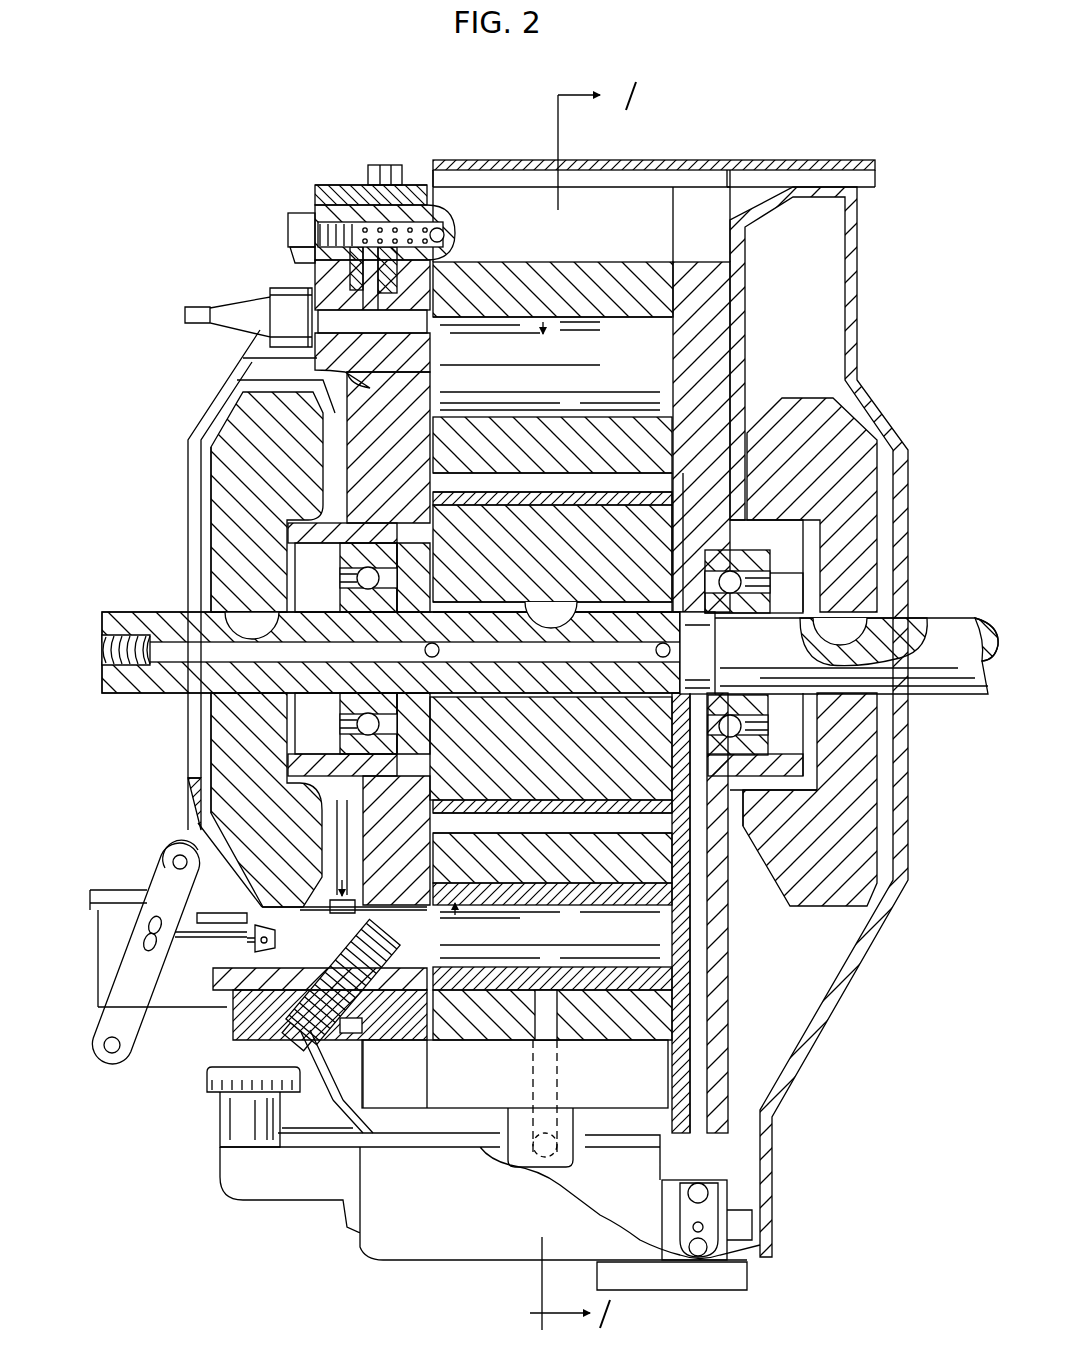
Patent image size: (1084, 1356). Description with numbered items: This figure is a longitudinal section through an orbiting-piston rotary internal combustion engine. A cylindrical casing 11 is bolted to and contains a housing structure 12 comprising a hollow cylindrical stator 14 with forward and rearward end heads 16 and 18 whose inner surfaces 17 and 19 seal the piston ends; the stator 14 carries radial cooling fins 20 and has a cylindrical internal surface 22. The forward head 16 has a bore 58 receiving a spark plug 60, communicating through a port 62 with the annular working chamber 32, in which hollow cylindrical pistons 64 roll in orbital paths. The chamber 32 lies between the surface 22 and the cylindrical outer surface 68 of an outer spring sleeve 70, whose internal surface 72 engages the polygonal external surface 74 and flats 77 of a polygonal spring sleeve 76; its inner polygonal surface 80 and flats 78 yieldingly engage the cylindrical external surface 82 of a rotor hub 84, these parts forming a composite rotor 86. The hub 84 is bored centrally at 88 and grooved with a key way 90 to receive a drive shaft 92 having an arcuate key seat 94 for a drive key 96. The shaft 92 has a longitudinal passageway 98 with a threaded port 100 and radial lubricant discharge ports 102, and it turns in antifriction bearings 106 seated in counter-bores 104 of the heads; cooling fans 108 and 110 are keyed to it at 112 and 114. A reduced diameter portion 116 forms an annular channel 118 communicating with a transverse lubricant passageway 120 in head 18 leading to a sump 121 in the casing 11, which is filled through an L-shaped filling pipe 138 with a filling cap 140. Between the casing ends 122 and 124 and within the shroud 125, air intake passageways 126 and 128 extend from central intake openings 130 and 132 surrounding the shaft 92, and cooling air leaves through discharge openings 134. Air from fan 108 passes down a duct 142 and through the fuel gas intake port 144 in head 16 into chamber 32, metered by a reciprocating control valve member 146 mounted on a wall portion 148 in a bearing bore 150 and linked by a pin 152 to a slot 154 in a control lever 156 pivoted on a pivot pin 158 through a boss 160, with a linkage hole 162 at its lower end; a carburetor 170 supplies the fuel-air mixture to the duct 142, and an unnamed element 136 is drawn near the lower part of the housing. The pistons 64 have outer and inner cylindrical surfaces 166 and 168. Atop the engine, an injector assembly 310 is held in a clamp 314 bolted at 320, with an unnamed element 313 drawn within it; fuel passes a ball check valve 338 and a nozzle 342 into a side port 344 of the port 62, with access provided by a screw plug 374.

The cylindrical casing 11 is at (290, 268).
The housing structure 12 is at (312, 262).
The hollow cylindrical stator 14 is at (580, 270).
The forward end head 16 is at (428, 372).
The inner surface of forward end head 17 is at (428, 1015).
The rearward end head 18 is at (680, 364).
The inner surface of rearward end head 19 is at (652, 1040).
The radial cooling fins 20 is at (583, 200).
The cylindrical internal surface of stator 22 is at (596, 312).
The annular working chamber 32 is at (662, 320).
The bore 58 is at (350, 347).
The spark plug 60 is at (233, 292).
The port 62 is at (432, 322).
The hollow cylindrical pistons 64 is at (543, 322).
The cylindrical outer surface of outer spring sleeve 68 is at (668, 415).
The hollow cylindrical outer spring sleeve 70 is at (578, 415).
The internal cylindrical surface of outer spring sleeve 72 is at (605, 474).
The polygonal external surface 74 is at (518, 490).
The polygonal spring sleeve 76 is at (610, 508).
The flats 77 is at (570, 495).
The flats 78 is at (470, 500).
The inner polygonal surface 80 is at (480, 505).
The cylindrical external surface of rotor hub 82 is at (645, 800).
The cylindrical rotor hub 84 is at (650, 530).
The composite engine rotor 86 is at (483, 415).
The central bore 88 is at (600, 690).
The key way 90 is at (640, 605).
The drive shaft 92 is at (165, 695).
The arcuate key seat 94 is at (540, 618).
The drive key 96 is at (570, 622).
The longitudinal passageway 98 is at (363, 655).
The threaded port 100 is at (140, 630).
The radial lubricant discharge ports 102 is at (438, 645).
The counter-bore 104 is at (374, 550).
The antifriction bearings 106 is at (356, 578).
The cooling fan 108 is at (215, 500).
The cooling fan 110 is at (885, 505).
The key 112 is at (253, 618).
The key 114 is at (852, 628).
The annular reduced diameter portion 116 is at (712, 630).
The annular channel 118 is at (715, 672).
The transverse lubricant passageway 120 is at (712, 938).
The lubricant sump 121 is at (598, 1268).
The casing end 122 is at (203, 418).
The casing end 124 is at (905, 470).
The casing shroud 125 is at (650, 162).
The air intake passageway 126 is at (243, 392).
The air intake passageway 128 is at (866, 410).
The air intake opening 130 is at (203, 538).
The air intake opening 132 is at (905, 545).
The air discharge openings 134 is at (875, 176).
The adjusting screw 136 is at (280, 1040).
The L-shaped filling pipe 138 is at (222, 1178).
The filling cap 140 is at (205, 1085).
The duct 142 is at (345, 880).
The fuel gas intake port 144 is at (398, 910).
The reciprocating control valve member 146 is at (277, 940).
The wall portion 148 is at (213, 950).
The bearing bore 150 is at (220, 968).
The pin 152 is at (146, 928).
The slot 154 is at (158, 968).
The control lever 156 is at (140, 1032).
The pivot pin 158 is at (170, 860).
The boss 160 is at (178, 840).
The hole 162 is at (112, 1053).
The outer cylindrical surface of piston 166 is at (538, 968).
The inner cylindrical surface of piston 168 is at (575, 905).
The carburetor 170 is at (90, 896).
The injector assembly 310 is at (358, 180).
The piston guide 313 is at (402, 290).
The clamp 314 is at (348, 185).
The bolting location 320 is at (396, 165).
The ball check valve 338 is at (447, 222).
The nozzle 342 is at (340, 321).
The side port 344 is at (388, 321).
The screw plug 374 is at (300, 213).